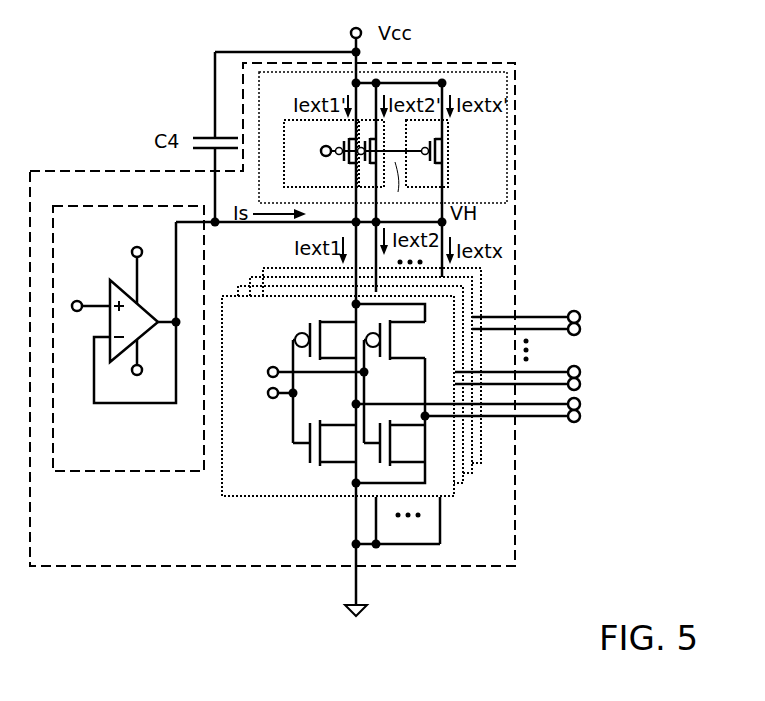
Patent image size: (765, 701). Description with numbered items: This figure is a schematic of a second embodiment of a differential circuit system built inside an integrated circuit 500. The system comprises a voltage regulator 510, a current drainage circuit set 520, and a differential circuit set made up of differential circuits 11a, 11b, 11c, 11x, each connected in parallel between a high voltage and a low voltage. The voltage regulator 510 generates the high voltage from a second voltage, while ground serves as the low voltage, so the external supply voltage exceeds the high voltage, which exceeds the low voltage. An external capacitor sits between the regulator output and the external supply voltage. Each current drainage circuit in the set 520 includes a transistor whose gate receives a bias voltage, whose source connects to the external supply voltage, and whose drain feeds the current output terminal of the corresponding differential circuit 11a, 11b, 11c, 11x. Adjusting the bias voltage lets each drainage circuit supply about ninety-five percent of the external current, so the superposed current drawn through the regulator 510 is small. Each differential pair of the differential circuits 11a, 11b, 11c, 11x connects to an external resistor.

The integrated circuit 500 is at (77, 562).
The voltage regulator 510 is at (110, 463).
The current drainage circuit set 520 is at (498, 162).
The differential circuit 11a is at (458, 493).
The differential circuit 11b is at (463, 483).
The differential circuit 11c is at (472, 473).
The differential circuit 11x is at (481, 463).